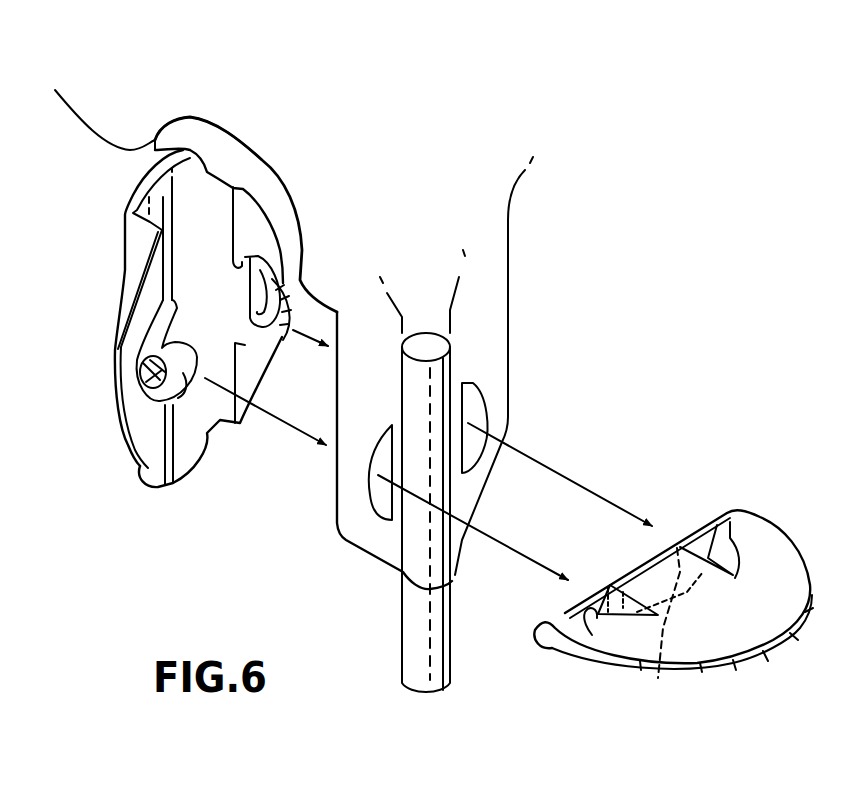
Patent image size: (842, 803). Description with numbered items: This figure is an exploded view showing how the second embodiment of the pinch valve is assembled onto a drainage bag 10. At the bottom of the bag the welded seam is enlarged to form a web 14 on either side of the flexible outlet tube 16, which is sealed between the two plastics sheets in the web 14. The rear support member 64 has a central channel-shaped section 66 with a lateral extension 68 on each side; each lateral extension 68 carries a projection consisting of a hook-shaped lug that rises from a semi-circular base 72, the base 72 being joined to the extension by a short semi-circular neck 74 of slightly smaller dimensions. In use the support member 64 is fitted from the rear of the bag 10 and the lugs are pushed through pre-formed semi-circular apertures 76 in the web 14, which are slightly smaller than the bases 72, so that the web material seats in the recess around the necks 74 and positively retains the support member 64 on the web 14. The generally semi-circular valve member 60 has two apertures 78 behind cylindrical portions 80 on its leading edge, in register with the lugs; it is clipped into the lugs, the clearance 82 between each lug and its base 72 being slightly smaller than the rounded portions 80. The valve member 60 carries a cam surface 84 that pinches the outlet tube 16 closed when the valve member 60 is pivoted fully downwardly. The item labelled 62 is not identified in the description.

The drainage bag 10 is at (512, 127).
The web 14 is at (490, 308).
The outlet tube 16 is at (417, 622).
The valve member 60 is at (777, 530).
The hook 62 is at (282, 288).
The rear support member 64 is at (95, 218).
The central channel-shaped section 66 is at (155, 140).
The lateral extension 68 is at (241, 188).
The semi-circular base 72 is at (140, 363).
The neck 74 is at (240, 250).
The semi-circular aperture 76 is at (480, 393).
The aperture 78 is at (730, 522).
The cylindrical portion 80 is at (700, 528).
The clearance 82 is at (252, 297).
The cam surface 84 is at (663, 675).